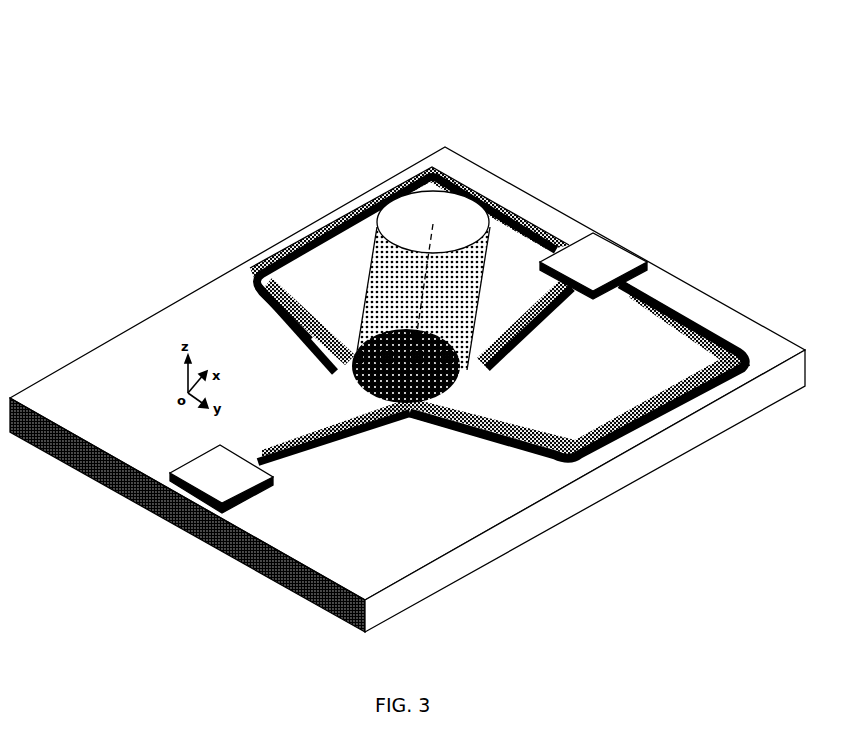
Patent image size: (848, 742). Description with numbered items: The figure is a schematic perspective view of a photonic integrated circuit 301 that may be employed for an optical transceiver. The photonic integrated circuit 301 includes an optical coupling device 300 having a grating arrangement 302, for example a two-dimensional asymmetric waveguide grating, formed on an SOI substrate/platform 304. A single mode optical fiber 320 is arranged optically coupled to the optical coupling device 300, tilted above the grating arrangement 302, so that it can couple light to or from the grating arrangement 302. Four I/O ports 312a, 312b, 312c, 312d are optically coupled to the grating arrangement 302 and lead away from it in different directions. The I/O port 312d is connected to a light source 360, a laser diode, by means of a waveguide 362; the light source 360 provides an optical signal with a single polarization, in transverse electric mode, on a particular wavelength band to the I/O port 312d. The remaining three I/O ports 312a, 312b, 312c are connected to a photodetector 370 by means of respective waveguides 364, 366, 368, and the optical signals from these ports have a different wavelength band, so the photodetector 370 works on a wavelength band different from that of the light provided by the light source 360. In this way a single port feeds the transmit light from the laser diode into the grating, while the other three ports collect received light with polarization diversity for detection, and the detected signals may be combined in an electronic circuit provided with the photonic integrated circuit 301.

The optical coupling device 300 is at (410, 442).
The photonic integrated circuit 301 is at (155, 67).
The grating arrangement 302 is at (334, 372).
The SOI substrate/platform 304 is at (343, 550).
The I/O port 312a is at (294, 304).
The I/O port 312b is at (545, 310).
The I/O port 312c is at (505, 408).
The I/O port 312d is at (264, 421).
The optical fiber 320 is at (410, 206).
The light source 360 is at (197, 468).
The waveguide 362 is at (283, 437).
The waveguide 364 is at (327, 223).
The waveguide 366 is at (537, 310).
The waveguide 368 is at (702, 380).
The photodetector 370 is at (623, 257).